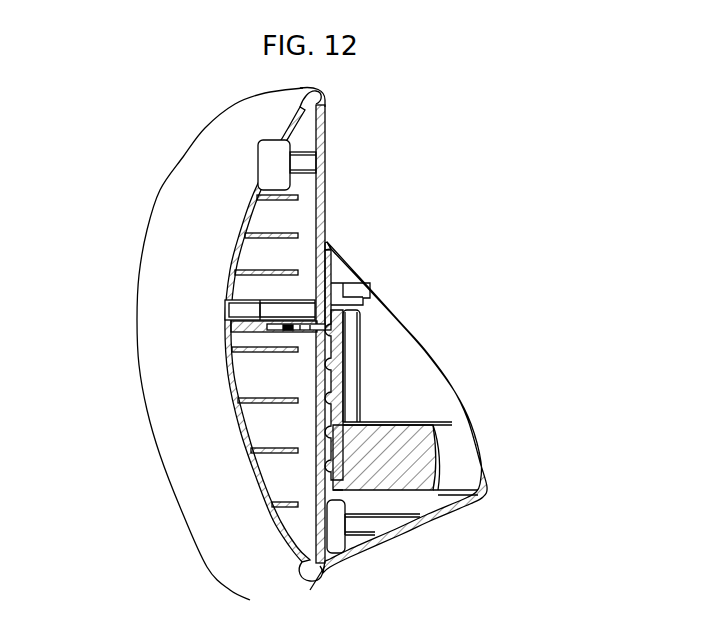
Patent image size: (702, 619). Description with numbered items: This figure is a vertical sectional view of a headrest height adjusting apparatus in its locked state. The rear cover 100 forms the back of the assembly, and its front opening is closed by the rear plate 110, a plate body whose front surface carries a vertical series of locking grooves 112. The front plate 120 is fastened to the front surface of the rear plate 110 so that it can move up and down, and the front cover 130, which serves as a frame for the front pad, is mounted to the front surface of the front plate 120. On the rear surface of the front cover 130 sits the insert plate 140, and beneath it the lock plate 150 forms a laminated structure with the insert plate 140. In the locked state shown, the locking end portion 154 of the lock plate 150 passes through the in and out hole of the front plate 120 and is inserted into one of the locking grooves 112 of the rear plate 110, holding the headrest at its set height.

The rear cover 100 is at (432, 352).
The rear plate 110 is at (362, 345).
The locking grooves 112 is at (337, 377).
The front plate 120 is at (327, 173).
The front cover 130 is at (177, 154).
The insert plate 140 is at (276, 301).
The lock plate 150 is at (284, 334).
The locking end portion 154 is at (328, 306).